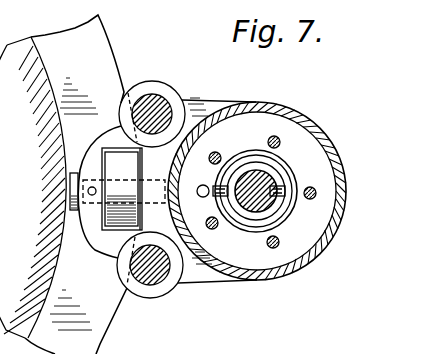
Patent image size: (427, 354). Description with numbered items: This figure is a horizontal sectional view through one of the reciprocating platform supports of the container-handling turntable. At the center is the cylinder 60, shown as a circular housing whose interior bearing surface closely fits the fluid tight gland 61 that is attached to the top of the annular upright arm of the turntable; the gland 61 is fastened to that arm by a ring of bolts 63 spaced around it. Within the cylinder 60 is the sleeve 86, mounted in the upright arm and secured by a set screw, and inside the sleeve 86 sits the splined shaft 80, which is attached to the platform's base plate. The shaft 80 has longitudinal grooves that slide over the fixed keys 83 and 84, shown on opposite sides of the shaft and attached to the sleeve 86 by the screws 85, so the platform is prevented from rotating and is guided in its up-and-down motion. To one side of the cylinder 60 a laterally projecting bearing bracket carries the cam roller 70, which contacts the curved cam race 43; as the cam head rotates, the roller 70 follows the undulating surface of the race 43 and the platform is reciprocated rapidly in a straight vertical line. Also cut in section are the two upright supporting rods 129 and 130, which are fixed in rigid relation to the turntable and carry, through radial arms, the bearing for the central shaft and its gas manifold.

The cam race 43 is at (100, 344).
The cylinder 60 is at (272, 191).
The fluid tight gland 61 is at (312, 138).
The bolts 63 is at (267, 242).
The cam roller 70 is at (110, 231).
The splined shaft 80 is at (279, 178).
The fixed key 83 is at (226, 198).
The fixed key 84 is at (276, 211).
The screws 85 is at (296, 203).
The sleeve 86 is at (272, 221).
The upright supporting rod 129 is at (152, 100).
The upright supporting rod 130 is at (153, 283).